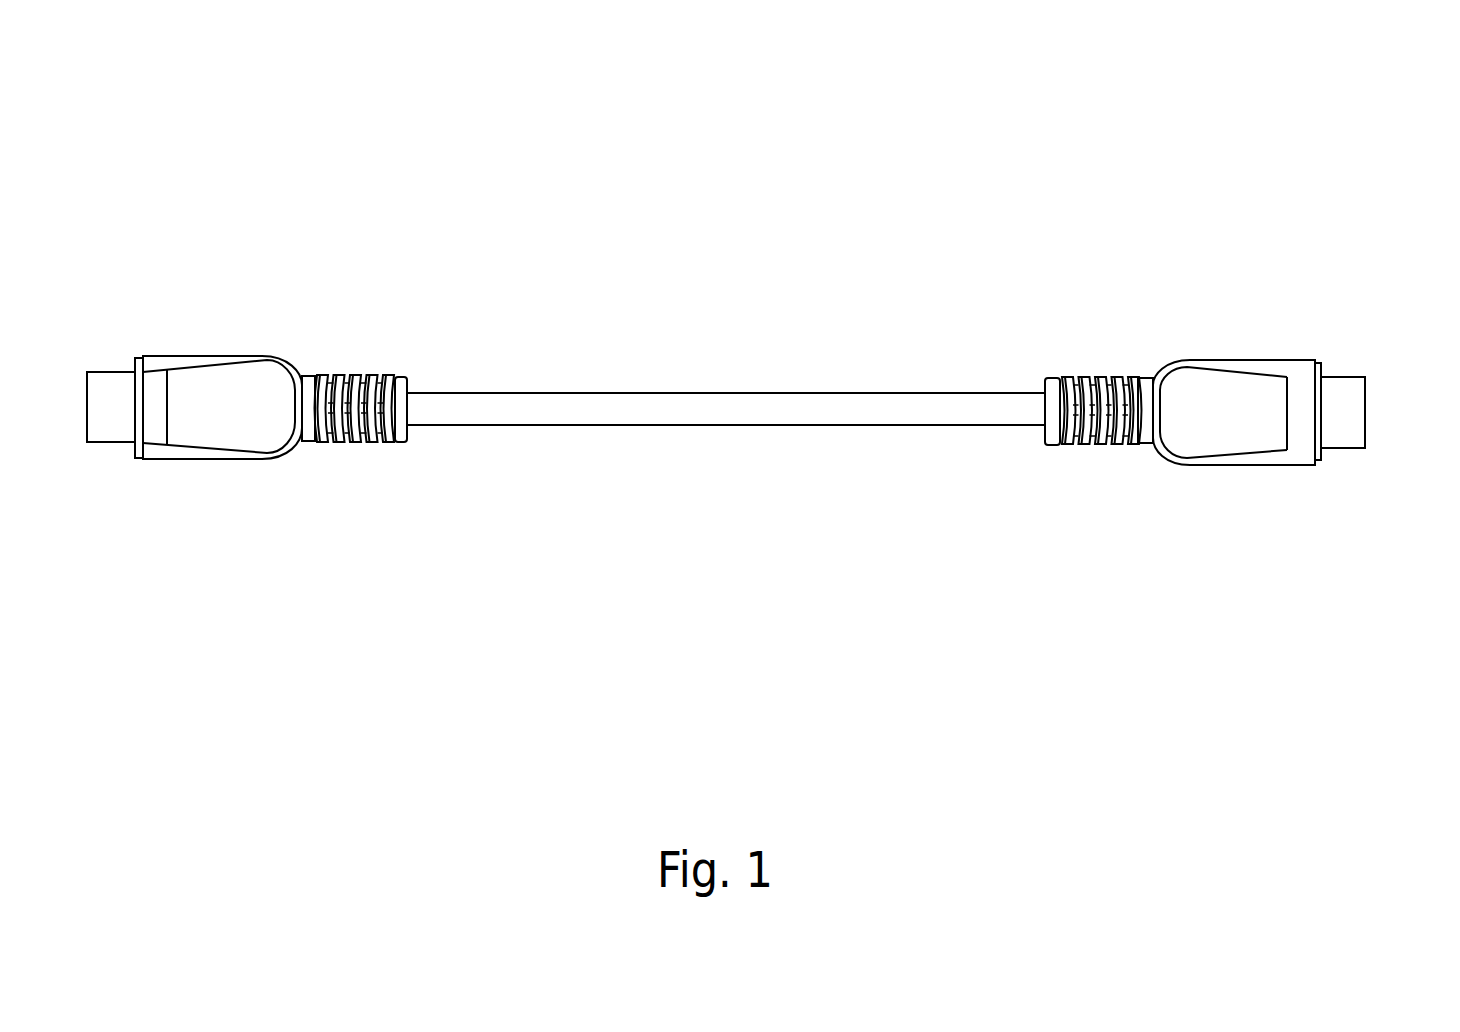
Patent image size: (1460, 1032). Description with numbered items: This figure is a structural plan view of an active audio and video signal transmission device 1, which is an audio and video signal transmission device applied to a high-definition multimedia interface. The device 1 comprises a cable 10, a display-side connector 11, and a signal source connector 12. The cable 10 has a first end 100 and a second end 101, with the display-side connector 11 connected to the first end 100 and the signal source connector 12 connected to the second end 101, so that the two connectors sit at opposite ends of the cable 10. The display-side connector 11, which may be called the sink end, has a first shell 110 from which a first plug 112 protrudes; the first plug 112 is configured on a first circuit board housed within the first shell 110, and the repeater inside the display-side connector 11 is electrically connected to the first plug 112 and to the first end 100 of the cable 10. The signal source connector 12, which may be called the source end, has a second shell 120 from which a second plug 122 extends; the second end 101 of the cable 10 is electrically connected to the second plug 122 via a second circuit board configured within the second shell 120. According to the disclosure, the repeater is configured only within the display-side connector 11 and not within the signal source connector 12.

The active audio and video signal transmission device 1 is at (1183, 75).
The cable 10 is at (768, 412).
The display-side connector 11 is at (345, 312).
The signal source connector 12 is at (1447, 323).
The first end 100 is at (312, 400).
The second end 101 is at (1142, 407).
The first shell 110 is at (218, 388).
The first plug 112 is at (105, 393).
The second shell 120 is at (1252, 393).
The second plug 122 is at (1337, 397).